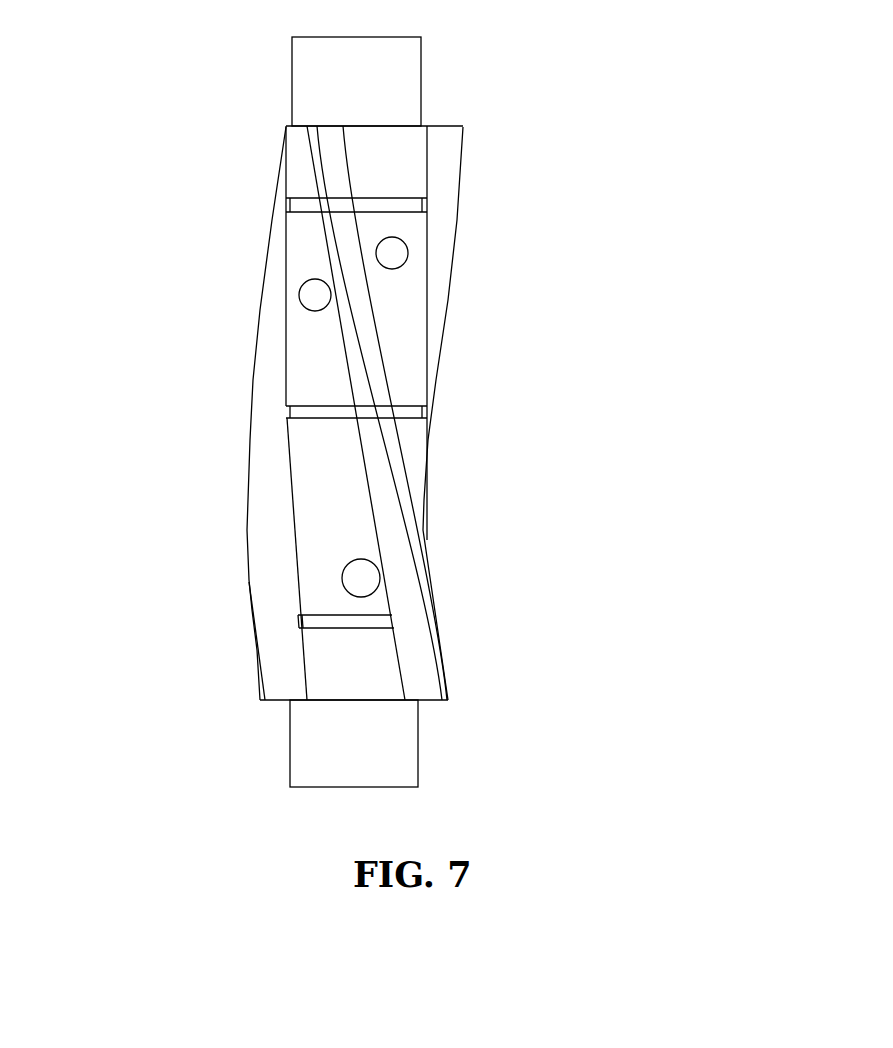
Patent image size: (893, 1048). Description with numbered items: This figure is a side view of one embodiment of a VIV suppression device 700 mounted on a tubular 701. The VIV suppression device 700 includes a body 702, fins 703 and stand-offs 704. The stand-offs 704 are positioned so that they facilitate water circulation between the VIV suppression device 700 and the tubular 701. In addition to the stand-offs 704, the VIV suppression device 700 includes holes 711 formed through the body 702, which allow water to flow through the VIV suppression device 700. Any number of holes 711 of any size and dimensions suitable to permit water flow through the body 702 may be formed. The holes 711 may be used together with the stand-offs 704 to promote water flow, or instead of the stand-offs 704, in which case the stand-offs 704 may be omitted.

The VIV suppression device 700 is at (632, 208).
The tubular 701 is at (278, 73).
The body 702 is at (420, 128).
The fins 703 is at (237, 373).
The stand-offs 704 is at (288, 196).
The holes 711 is at (287, 288).